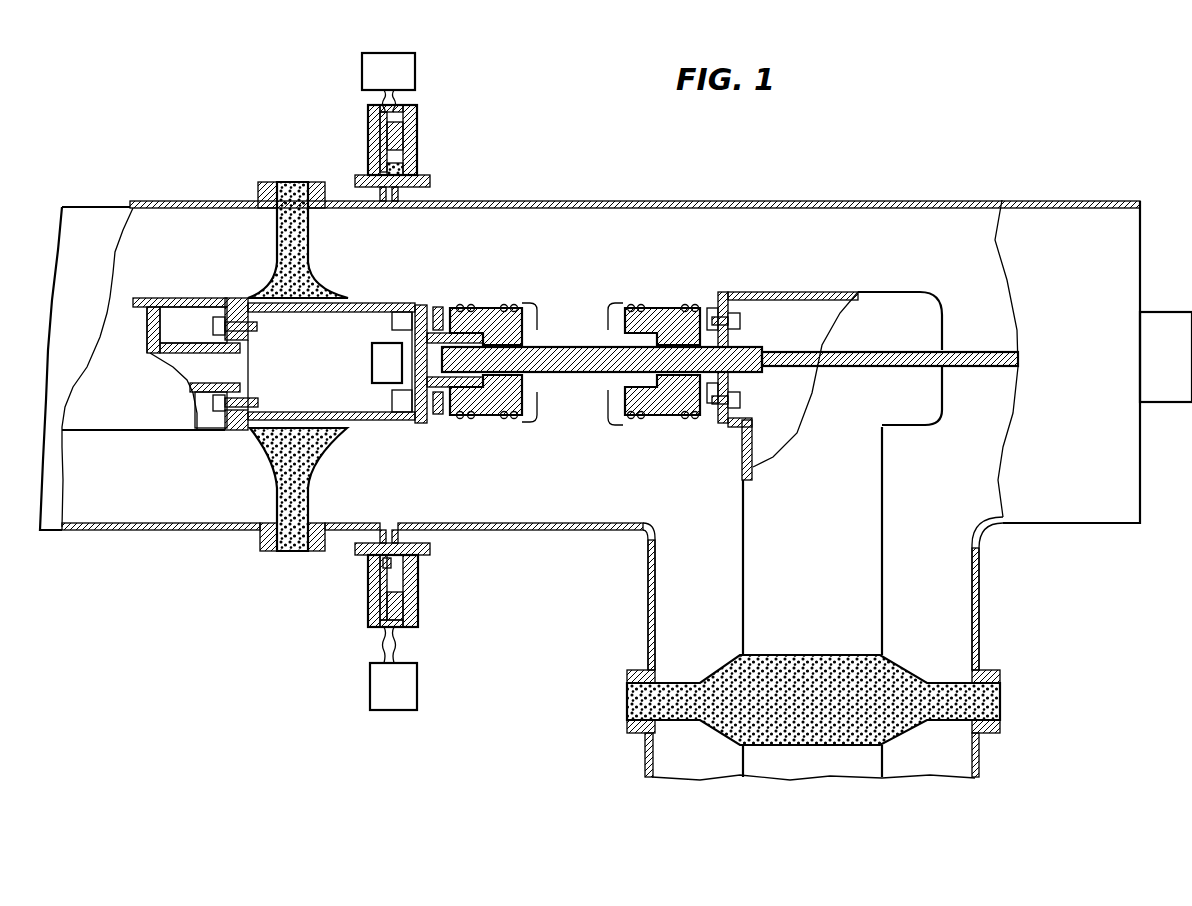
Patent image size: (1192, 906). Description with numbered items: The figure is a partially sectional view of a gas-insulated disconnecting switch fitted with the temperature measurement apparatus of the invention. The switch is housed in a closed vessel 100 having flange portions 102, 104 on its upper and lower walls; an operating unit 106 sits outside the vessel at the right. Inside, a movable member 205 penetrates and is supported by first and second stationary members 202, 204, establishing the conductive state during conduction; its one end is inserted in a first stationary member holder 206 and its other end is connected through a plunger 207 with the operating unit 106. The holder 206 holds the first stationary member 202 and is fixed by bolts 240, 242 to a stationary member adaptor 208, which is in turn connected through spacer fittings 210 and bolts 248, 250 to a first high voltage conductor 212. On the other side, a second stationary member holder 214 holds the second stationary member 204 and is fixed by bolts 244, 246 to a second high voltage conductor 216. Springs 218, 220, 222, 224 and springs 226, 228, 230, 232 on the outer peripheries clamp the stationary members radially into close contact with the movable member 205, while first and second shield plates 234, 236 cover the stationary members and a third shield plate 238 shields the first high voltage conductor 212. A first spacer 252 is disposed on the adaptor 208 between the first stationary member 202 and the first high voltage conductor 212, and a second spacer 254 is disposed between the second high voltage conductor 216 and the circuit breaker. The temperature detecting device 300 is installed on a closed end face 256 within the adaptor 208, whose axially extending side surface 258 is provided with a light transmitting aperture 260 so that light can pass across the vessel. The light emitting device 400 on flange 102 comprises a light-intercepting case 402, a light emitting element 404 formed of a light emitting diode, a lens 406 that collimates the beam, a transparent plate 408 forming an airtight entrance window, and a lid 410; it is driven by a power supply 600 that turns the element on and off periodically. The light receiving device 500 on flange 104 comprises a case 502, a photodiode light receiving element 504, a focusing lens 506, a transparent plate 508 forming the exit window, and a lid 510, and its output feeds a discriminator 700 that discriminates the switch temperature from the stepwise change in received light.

The closed vessel 100 is at (585, 201).
The flange portion 102 is at (430, 183).
The flange portion 104 is at (430, 547).
The operating unit 106 is at (1160, 312).
The first stationary member 202 is at (495, 308).
The second stationary member 204 is at (658, 308).
The movable member 205 is at (568, 372).
The first stationary member holder 206 is at (421, 305).
The plunger 207 is at (780, 366).
The stationary member adaptor 208 is at (358, 303).
The spacer fittings 210 is at (240, 298).
The first high voltage conductor 212 is at (136, 300).
The second stationary member holder 214 is at (722, 292).
The second high voltage conductor 216 is at (773, 292).
The spring 218 is at (460, 304).
The spring 220 is at (476, 300).
The spring 222 is at (505, 304).
The spring 224 is at (520, 304).
The spring 226 is at (627, 304).
The spring 228 is at (640, 304).
The spring 230 is at (685, 304).
The spring 232 is at (695, 304).
The first shield plate 234 is at (537, 304).
The second shield plate 236 is at (608, 320).
The third shield plate 238 is at (186, 287).
The bolt 240 is at (438, 307).
The bolt 242 is at (440, 414).
The bolt 244 is at (740, 322).
The bolt 246 is at (710, 408).
The bolt 248 is at (213, 326).
The bolt 250 is at (256, 403).
The first spacer 252 is at (276, 241).
The second spacer 254 is at (707, 670).
The closed end face 256 is at (380, 338).
The side surface 258 is at (360, 425).
The light transmitting aperture 260 is at (390, 303).
The temperature detecting device 300 is at (372, 362).
The light emitting device 400 is at (415, 144).
The case 402 is at (417, 142).
The light emitting element 404 is at (368, 128).
The lens 406 is at (380, 152).
The transparent plate 408 is at (380, 172).
The lid 410 is at (405, 105).
The light receiving device 500 is at (400, 596).
The case 502 is at (418, 588).
The light receiving element 504 is at (380, 609).
The lens 506 is at (380, 580).
The light transmitting transparent plate 508 is at (410, 565).
The lid 510 is at (378, 628).
The power supply 600 is at (415, 72).
The discriminator 700 is at (370, 684).